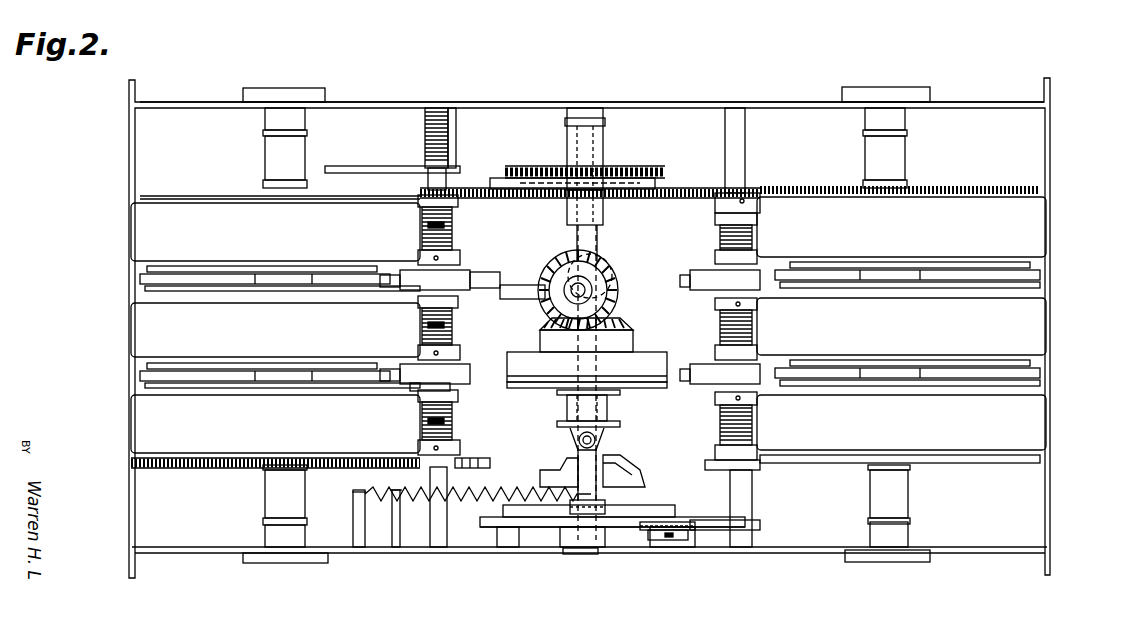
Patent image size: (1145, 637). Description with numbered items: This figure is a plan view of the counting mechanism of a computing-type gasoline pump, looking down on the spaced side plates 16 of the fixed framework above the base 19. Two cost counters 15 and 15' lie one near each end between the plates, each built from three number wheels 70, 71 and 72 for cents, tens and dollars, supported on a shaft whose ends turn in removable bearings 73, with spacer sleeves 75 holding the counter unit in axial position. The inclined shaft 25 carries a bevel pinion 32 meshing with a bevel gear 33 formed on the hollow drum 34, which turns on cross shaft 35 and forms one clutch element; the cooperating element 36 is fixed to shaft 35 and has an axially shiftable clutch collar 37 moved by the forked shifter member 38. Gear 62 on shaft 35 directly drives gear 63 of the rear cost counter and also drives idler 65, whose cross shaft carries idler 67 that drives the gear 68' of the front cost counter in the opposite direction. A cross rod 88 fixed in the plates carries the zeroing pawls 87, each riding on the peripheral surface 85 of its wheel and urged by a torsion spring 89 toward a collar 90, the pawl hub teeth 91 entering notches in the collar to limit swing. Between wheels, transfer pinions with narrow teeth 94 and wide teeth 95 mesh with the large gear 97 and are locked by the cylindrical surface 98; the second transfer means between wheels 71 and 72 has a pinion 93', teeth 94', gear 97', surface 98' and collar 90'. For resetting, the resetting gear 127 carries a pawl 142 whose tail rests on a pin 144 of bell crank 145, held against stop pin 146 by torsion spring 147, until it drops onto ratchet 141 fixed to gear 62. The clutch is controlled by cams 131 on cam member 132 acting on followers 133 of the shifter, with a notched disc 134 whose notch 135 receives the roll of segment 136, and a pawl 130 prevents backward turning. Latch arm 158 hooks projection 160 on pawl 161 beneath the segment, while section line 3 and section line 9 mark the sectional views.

The section line 3- 3 is at (673, 90).
The section line 9- 9 is at (285, 82).
The cost counter 15 is at (67, 325).
The cost counter 15' is at (1091, 325).
The side plates 16 is at (508, 104).
The base 19 is at (133, 130).
The inclined shaft 25 is at (598, 265).
The bevel pinion 32 is at (606, 282).
The bevel gear 33 is at (618, 326).
The hollow drum 34 is at (652, 365).
The cross shaft 35 is at (600, 240).
The clutch element 36 is at (645, 391).
The clutch collar 37 is at (620, 425).
The shifter member 38 is at (566, 405).
The gear 62 is at (712, 173).
The gear 63 is at (985, 175).
The idler gear 65 is at (503, 205).
The idler 67 is at (488, 455).
The rack 68' is at (275, 474).
The number wheel 70 is at (136, 434).
The number wheel 71 is at (137, 337).
The number wheel 72 is at (135, 207).
The bearings 73 is at (270, 118).
The spacer sleeves 75 is at (270, 152).
The peripheral surface 85 is at (145, 289).
The pawl 87 is at (458, 395).
The cross rod 88 is at (745, 495).
The torsion spring 89 is at (450, 232).
The collar 90 is at (432, 269).
The collar 90' is at (400, 506).
The teeth 91 is at (452, 213).
The pinion 93' is at (508, 270).
The teeth 94 is at (461, 326).
The teeth 94' is at (517, 265).
The wide teeth 95 is at (455, 300).
The gear 97 is at (232, 360).
The gear 97' is at (228, 252).
The cylindrical surface 98 is at (229, 381).
The cylindrical surface 98' is at (233, 269).
The resetting gear 127 is at (663, 162).
The pawl 130 is at (508, 530).
The cams 131 is at (625, 462).
The cam member 132 is at (645, 478).
The cam followers 133 is at (579, 443).
The disc 134 is at (538, 514).
The notch 135 is at (489, 486).
The segment 136 is at (599, 538).
The ratchet 141 is at (628, 168).
The pawl 142 is at (545, 165).
The pin 144 is at (505, 202).
The bell crank 145 is at (428, 150).
The stop pin 146 is at (425, 118).
The torsion spring 147 is at (455, 116).
The latch arm 158 is at (654, 530).
The projection 160 is at (679, 540).
The pawl 161 is at (722, 498).